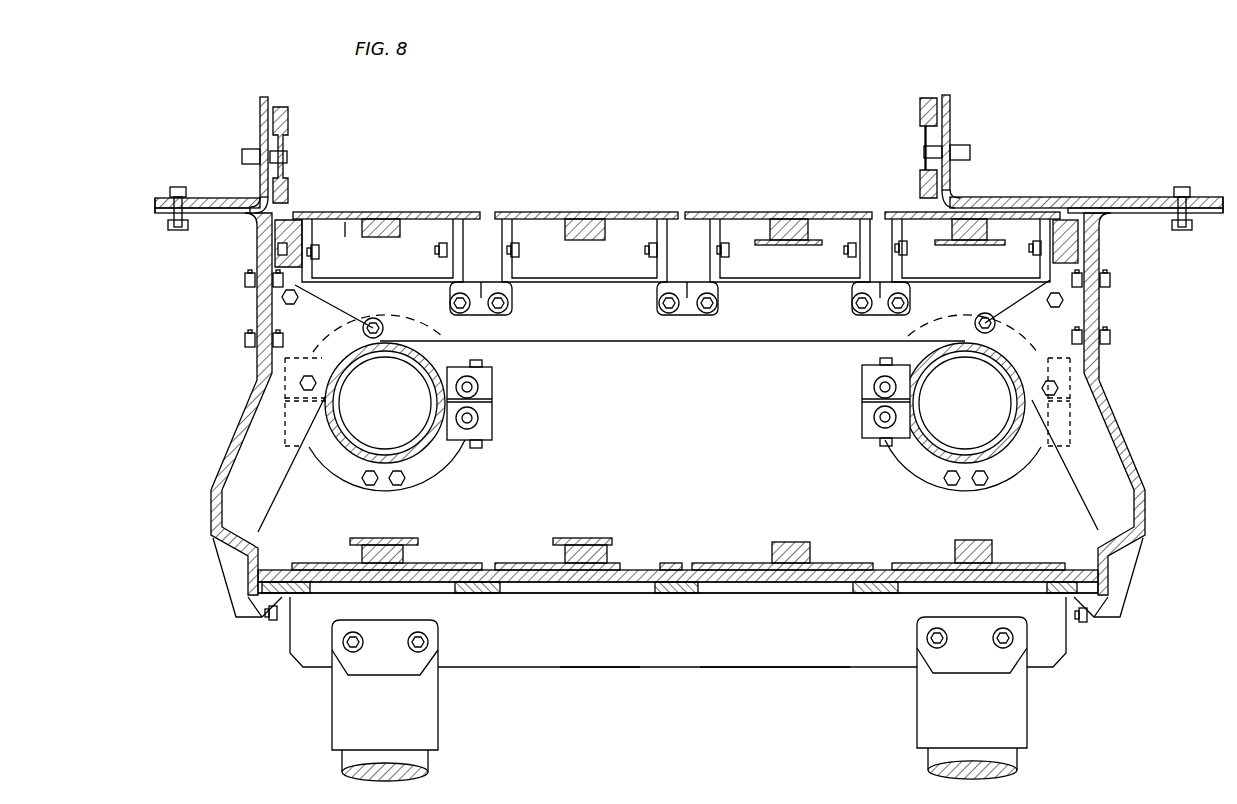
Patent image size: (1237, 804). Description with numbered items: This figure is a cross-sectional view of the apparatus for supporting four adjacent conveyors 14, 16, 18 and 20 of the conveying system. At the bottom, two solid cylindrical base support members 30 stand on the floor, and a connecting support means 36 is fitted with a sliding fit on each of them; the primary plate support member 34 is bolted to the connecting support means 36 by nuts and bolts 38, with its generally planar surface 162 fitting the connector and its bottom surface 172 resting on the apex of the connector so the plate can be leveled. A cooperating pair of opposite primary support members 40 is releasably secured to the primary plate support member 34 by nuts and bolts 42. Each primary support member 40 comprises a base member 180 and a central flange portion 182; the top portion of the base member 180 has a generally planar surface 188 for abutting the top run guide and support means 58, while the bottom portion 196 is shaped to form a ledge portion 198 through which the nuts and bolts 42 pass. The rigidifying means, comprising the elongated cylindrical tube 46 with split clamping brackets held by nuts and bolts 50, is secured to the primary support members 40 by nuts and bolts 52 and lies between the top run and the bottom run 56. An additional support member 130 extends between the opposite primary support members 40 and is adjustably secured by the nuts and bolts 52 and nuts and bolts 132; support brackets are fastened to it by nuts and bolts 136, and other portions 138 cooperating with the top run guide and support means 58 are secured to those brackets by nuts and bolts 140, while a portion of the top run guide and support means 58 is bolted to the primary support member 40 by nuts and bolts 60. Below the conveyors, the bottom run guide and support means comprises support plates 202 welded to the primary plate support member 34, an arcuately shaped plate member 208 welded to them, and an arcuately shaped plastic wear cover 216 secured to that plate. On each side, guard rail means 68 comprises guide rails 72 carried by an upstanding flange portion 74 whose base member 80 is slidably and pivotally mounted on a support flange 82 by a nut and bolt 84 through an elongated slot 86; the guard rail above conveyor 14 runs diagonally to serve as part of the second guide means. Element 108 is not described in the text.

The conveyor means 14 is at (908, 212).
The conveyor means 16 is at (785, 212).
The conveyor means 18 is at (620, 212).
The conveyor means 20 is at (445, 212).
The base support member 30 is at (430, 762).
The primary plate support member 34 is at (585, 668).
The connecting support means 36 is at (425, 727).
The nuts and bolts 38 is at (350, 648).
The primary support member 40 is at (1128, 420).
The nuts and bolts 42 is at (275, 622).
The elongated cylindrical tube 46 is at (438, 397).
The nuts and bolts 50 is at (303, 456).
The nuts and bolts 52 is at (380, 324).
The bottom run 56 is at (700, 564).
The top run guide and support means 58 is at (346, 226).
The nuts and bolts 60 is at (320, 257).
The guard rail means 68 is at (1060, 132).
The guide rail 72 is at (290, 193).
The upstanding flange portion 74 is at (260, 117).
The base member 80 is at (155, 207).
The support flange 82 is at (155, 212).
The nut and bolt 84 is at (178, 187).
The elongated slot 86 is at (213, 198).
The spacer block 108 is at (418, 542).
The additional support member 130 is at (607, 341).
The nuts and bolts 132 is at (299, 297).
The nuts and bolts 136 is at (462, 312).
The other portions 138 is at (372, 234).
The nuts and bolts 140 is at (437, 254).
The generally planar surface 162 is at (625, 638).
The bottom surface 172 is at (790, 667).
The base member 180 is at (248, 428).
The central flange portion 182 is at (1068, 486).
The generally planar surface 188 is at (276, 245).
The bottom portion 196 is at (212, 538).
The ledge portion 198 is at (248, 612).
The support plates 202 is at (480, 594).
The arcuately shaped plate member 208 is at (800, 586).
The arcuately shaped plastic wear cover 216 is at (745, 593).